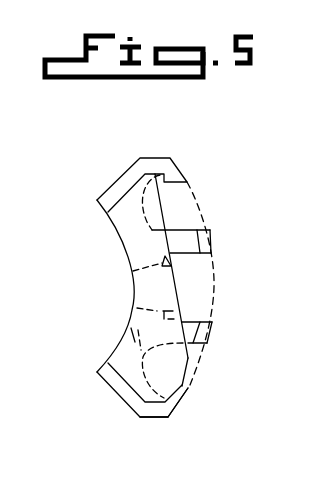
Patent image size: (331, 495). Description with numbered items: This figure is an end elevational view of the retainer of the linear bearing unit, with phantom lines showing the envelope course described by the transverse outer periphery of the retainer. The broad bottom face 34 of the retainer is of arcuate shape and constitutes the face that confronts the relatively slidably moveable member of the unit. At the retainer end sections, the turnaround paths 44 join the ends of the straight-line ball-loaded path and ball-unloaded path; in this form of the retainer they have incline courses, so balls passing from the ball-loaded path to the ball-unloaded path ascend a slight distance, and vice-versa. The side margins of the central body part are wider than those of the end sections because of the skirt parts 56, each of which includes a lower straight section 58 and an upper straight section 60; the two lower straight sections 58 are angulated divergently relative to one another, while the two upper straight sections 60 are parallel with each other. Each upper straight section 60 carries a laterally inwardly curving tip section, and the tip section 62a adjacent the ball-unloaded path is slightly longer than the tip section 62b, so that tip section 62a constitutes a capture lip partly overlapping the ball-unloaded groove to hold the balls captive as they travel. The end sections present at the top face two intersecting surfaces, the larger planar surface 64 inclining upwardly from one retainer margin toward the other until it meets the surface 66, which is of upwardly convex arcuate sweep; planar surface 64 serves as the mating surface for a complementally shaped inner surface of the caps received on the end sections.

The bottom face 34 is at (110, 353).
The turnaround paths 44 is at (131, 336).
The skirt parts 56 is at (142, 419).
The lower straight section 58 is at (116, 392).
The upper straight section 60 is at (167, 418).
The tip section 62a is at (190, 396).
The tip section 62b is at (173, 173).
The planar surface 64 is at (162, 212).
The arcuate surface 66 is at (190, 365).